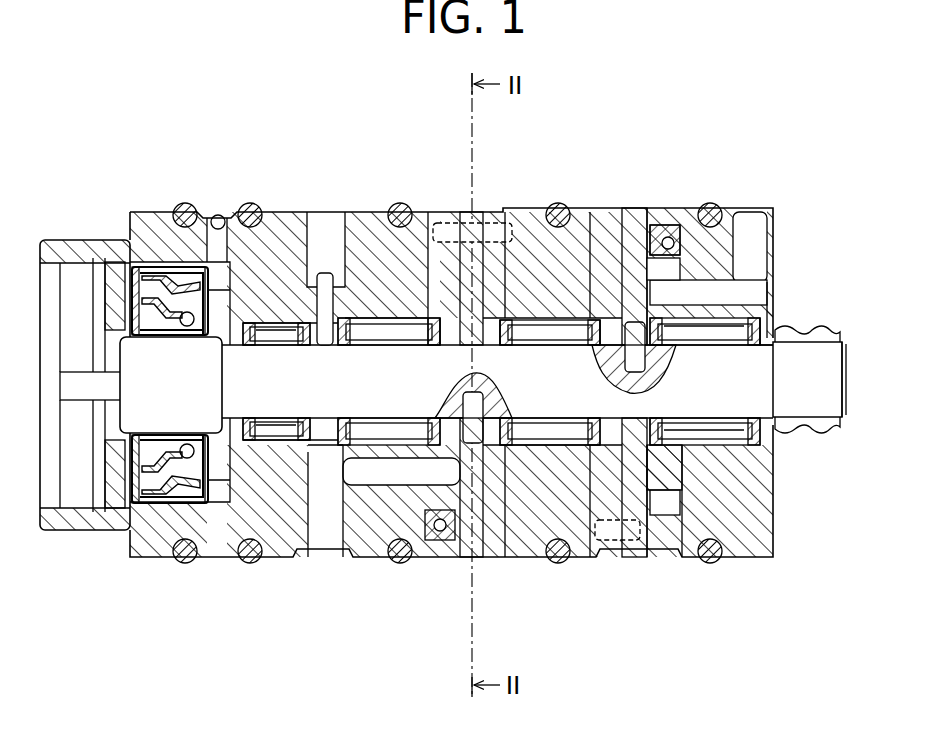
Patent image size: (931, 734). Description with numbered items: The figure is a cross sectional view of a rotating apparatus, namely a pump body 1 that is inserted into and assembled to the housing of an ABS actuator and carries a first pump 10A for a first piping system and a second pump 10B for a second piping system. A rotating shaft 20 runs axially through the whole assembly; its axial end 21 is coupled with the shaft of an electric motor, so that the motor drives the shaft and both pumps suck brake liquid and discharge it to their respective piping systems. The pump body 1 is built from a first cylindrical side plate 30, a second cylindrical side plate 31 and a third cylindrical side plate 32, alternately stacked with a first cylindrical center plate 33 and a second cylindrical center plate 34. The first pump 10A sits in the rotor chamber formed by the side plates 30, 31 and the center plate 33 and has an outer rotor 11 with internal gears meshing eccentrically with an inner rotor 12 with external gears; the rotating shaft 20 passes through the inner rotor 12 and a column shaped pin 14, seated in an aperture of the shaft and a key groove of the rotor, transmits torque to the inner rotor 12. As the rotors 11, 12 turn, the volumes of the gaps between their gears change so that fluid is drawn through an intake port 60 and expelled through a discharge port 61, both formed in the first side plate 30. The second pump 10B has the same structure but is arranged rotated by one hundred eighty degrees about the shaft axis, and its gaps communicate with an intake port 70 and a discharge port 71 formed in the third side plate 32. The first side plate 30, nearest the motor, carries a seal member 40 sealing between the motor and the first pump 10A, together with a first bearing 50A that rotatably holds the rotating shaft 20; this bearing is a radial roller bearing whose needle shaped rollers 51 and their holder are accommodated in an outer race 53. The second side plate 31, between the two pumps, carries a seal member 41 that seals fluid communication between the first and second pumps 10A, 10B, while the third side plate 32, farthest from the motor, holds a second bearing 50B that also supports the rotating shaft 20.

The pump body 1 is at (116, 192).
The first pump 10A is at (483, 562).
The second pump 10B is at (633, 206).
The outer rotor 11 is at (630, 300).
The inner rotor 12 is at (690, 235).
The pin 14 is at (600, 330).
The rotating shaft 20 is at (807, 355).
The axial end 21 is at (78, 392).
The first cylindrical side plate 30 is at (277, 550).
The second cylindrical side plate 31 is at (583, 552).
The third cylindrical side plate 32 is at (746, 543).
The first cylindrical center plate 33 is at (470, 548).
The second cylindrical center plate 34 is at (657, 252).
The seal member 40 is at (290, 323).
The seal member 41 is at (540, 320).
The first bearing 50A is at (410, 316).
The second bearing 50B is at (705, 452).
The needle shaped rollers 51 is at (350, 323).
The outer race 53 is at (380, 320).
The intake port 60 is at (327, 548).
The discharge port 61 is at (436, 265).
The intake port 70 is at (757, 220).
The discharge port 71 is at (702, 452).